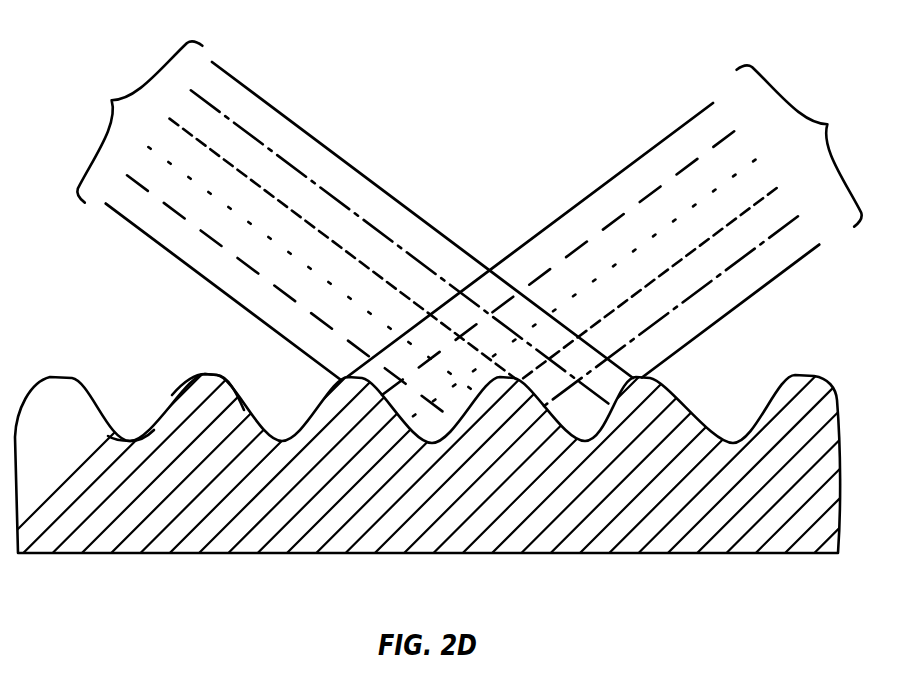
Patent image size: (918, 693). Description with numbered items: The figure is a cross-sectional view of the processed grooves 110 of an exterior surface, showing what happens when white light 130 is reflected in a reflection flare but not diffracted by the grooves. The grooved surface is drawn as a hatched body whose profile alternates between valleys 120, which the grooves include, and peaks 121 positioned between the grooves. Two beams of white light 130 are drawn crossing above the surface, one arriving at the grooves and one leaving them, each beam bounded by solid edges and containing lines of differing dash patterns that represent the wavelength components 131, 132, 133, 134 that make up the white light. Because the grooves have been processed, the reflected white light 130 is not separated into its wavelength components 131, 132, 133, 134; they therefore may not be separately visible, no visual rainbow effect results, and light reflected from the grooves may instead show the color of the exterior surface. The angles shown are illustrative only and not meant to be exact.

The grooves 110 is at (133, 372).
The valleys 120 is at (130, 442).
The peaks 121 is at (207, 372).
The white light 130 is at (469, 210).
The wavelength component 131 is at (220, 62).
The wavelength component 132 is at (207, 100).
The wavelength component 133 is at (150, 147).
The wavelength component 134 is at (128, 174).